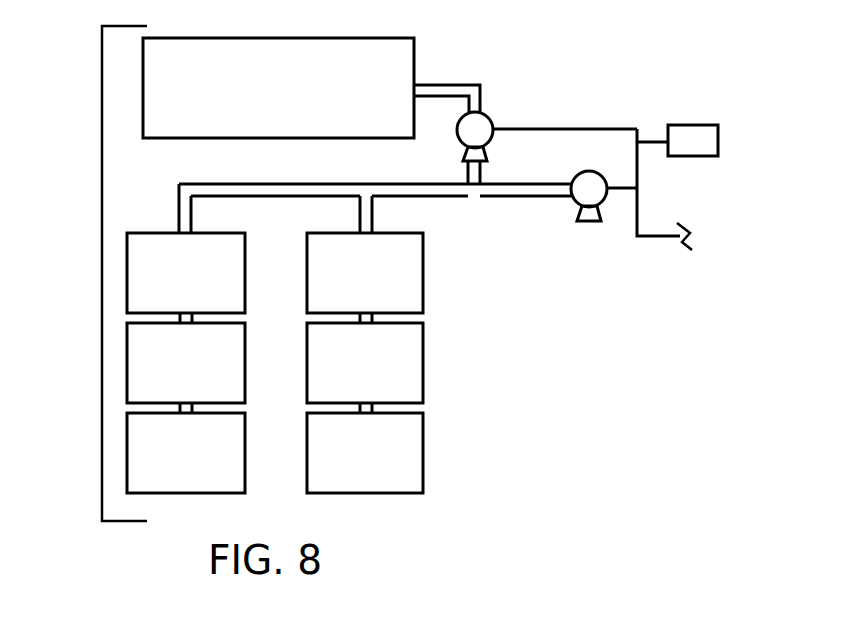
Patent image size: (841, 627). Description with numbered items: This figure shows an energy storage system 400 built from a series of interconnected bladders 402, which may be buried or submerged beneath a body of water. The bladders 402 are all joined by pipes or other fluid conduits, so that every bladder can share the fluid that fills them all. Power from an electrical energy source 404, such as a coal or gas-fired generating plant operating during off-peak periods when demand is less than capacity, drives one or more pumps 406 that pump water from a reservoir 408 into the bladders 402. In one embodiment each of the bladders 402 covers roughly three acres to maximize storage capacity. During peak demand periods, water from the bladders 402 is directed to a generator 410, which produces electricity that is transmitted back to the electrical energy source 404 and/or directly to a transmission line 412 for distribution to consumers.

The energy storage system 400 is at (101, 295).
The bladders 402 is at (210, 281).
The electrical energy source 404 is at (692, 138).
The pump 406 is at (478, 126).
The reservoir 408 is at (296, 86).
The generator 410 is at (590, 188).
The transmission line 412 is at (667, 243).